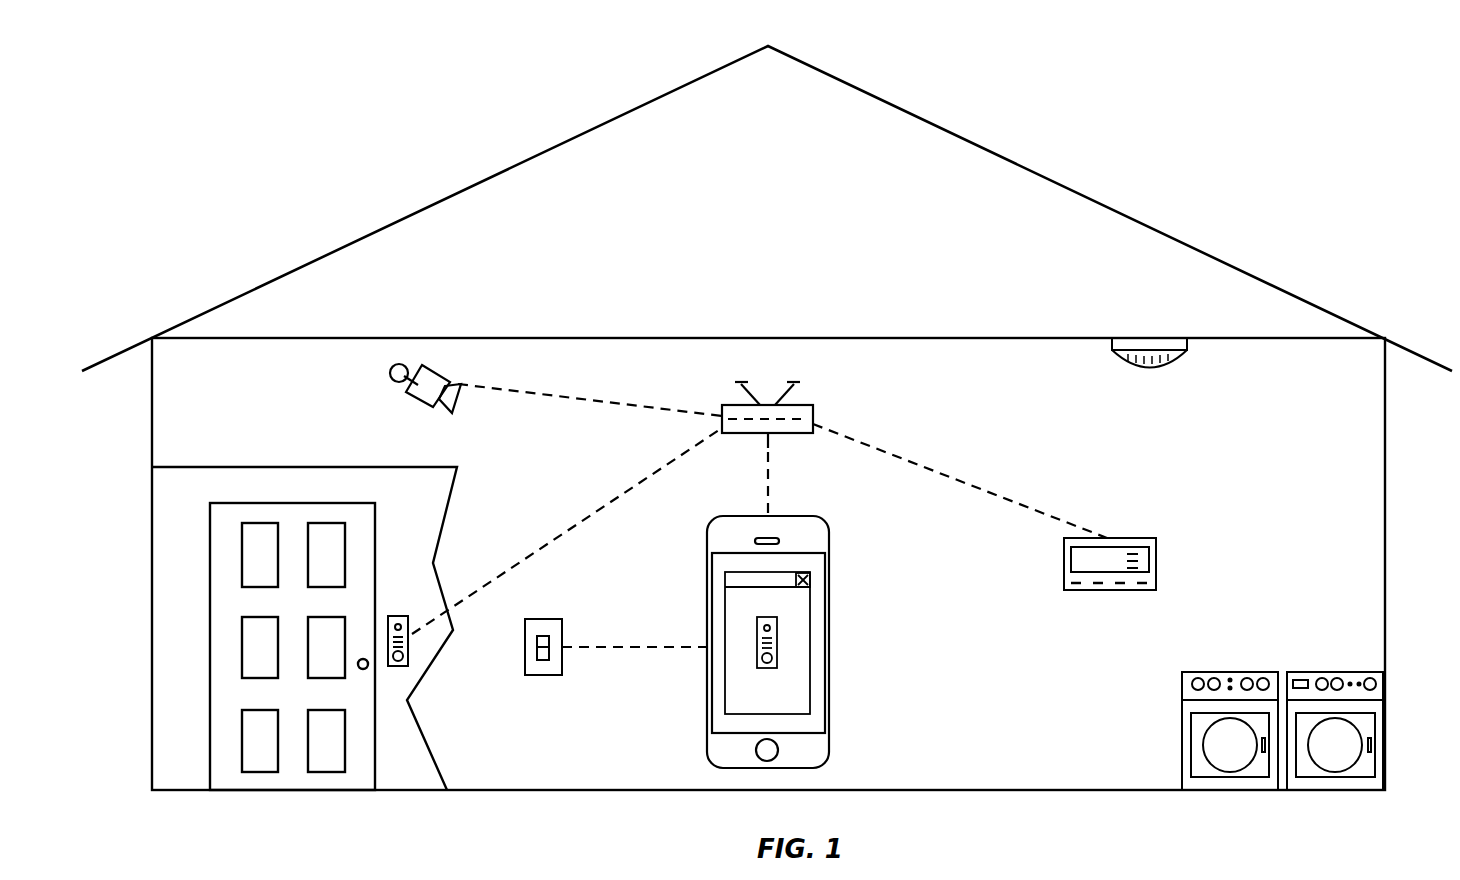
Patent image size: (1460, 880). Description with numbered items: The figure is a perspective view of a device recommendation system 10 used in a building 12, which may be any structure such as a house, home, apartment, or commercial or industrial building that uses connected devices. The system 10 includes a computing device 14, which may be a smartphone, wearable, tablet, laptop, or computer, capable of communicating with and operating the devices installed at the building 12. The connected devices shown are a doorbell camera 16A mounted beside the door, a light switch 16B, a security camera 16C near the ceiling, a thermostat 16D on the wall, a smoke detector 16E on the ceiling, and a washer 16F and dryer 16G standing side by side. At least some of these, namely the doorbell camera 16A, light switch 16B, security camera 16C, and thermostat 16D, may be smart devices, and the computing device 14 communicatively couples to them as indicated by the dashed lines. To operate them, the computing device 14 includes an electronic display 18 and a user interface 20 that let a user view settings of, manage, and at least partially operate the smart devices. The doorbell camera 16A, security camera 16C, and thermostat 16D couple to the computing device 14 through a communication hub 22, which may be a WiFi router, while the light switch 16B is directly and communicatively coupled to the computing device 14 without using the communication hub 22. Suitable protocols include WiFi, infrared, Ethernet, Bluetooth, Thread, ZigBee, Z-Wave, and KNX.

The device recommendation system 10 is at (955, 365).
The building 12 is at (1038, 170).
The computing device 14 is at (829, 642).
The doorbell camera 16A is at (400, 668).
The light switch 16B is at (545, 619).
The security camera 16C is at (428, 366).
The thermostat 16D is at (1156, 558).
The smoke detector 16E is at (1150, 367).
The washer 16F is at (1232, 669).
The dryer 16G is at (1336, 669).
The electronic display 18 is at (719, 608).
The user interface 20 is at (811, 617).
The communication hub 22 is at (805, 405).